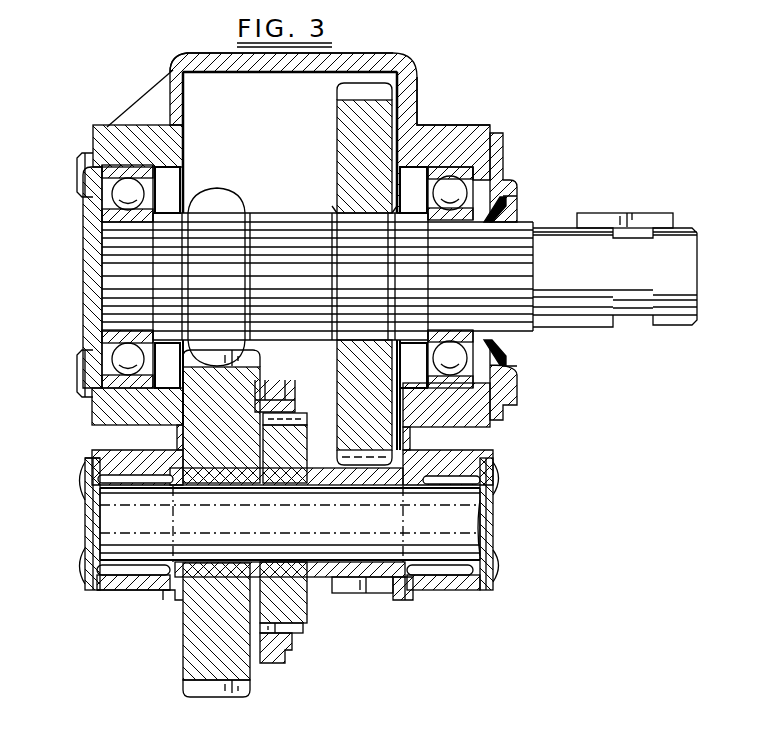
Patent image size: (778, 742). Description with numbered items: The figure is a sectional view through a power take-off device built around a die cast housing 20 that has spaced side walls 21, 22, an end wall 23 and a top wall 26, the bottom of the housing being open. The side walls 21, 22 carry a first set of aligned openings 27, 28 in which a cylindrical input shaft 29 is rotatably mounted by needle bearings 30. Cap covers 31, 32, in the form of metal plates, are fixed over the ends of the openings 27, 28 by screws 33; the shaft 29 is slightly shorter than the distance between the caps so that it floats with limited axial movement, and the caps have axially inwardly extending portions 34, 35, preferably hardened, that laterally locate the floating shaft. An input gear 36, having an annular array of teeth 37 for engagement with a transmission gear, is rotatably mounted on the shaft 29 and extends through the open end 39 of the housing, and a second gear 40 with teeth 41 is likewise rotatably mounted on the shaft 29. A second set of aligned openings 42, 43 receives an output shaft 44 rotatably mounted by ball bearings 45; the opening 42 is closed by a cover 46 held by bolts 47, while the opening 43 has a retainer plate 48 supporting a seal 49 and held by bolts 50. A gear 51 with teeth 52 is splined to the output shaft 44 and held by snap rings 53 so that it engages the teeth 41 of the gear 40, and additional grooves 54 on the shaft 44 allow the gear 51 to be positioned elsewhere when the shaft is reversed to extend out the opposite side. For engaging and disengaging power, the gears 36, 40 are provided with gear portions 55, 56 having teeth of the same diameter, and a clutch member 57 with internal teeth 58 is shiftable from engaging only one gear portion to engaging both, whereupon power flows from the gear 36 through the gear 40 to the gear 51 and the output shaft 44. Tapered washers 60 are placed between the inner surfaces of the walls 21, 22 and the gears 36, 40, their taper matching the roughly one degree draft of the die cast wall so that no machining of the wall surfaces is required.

The housing 20 is at (166, 66).
The side wall 21 is at (175, 81).
The side wall 22 is at (411, 85).
The end wall 23 is at (260, 111).
The top wall 26 is at (371, 56).
The opening 27 is at (132, 474).
The opening 28 is at (441, 478).
The input shaft 29 is at (290, 524).
The needle bearing 30 is at (118, 578).
The cap cover 31 is at (85, 497).
The cap cover 32 is at (495, 502).
The screw 33 is at (80, 568).
The axially inwardly extending portion 34 is at (88, 522).
The axially inwardly extending portion 35 is at (490, 530).
The input gear 36 is at (182, 672).
The teeth 37 is at (192, 693).
The open end 39 is at (175, 594).
The second gear 40 is at (335, 566).
The teeth 41 is at (377, 594).
The opening 42 is at (124, 166).
The opening 43 is at (440, 170).
The output shaft 44 is at (399, 276).
The ball bearing 45 is at (112, 200).
The cover 46 is at (87, 284).
The bolt 47 is at (78, 183).
The retainer plate 48 is at (500, 196).
The seal 49 is at (512, 208).
The bolt 50 is at (500, 134).
The gear 51 is at (345, 153).
The teeth 52 is at (340, 93).
The snap ring 53 is at (398, 205).
The groove 54 is at (216, 266).
The gear portion 55 is at (280, 618).
The gear portion 56 is at (303, 634).
The clutch member 57 is at (258, 683).
The internal teeth 58 is at (262, 630).
The tapered washer 60 is at (178, 606).